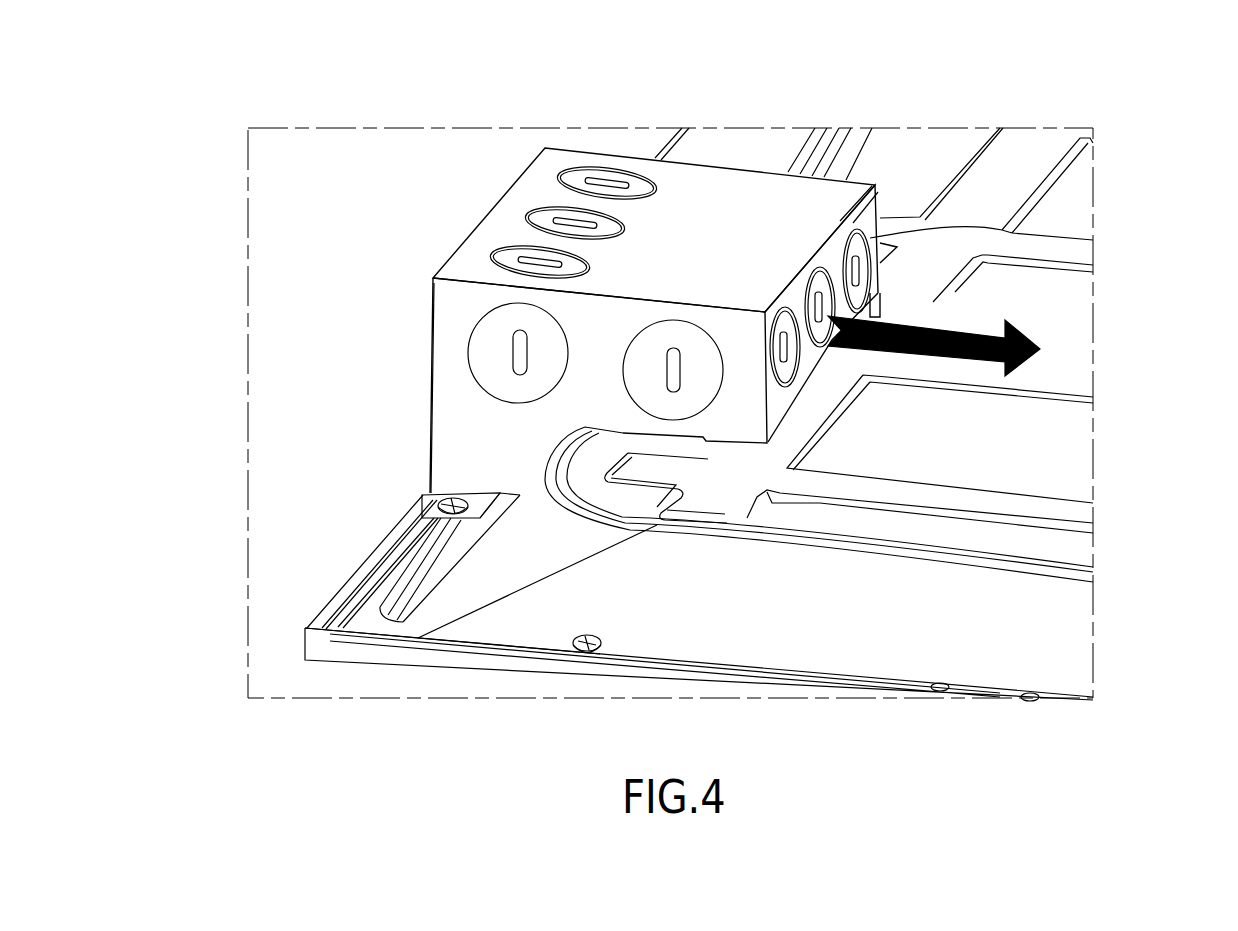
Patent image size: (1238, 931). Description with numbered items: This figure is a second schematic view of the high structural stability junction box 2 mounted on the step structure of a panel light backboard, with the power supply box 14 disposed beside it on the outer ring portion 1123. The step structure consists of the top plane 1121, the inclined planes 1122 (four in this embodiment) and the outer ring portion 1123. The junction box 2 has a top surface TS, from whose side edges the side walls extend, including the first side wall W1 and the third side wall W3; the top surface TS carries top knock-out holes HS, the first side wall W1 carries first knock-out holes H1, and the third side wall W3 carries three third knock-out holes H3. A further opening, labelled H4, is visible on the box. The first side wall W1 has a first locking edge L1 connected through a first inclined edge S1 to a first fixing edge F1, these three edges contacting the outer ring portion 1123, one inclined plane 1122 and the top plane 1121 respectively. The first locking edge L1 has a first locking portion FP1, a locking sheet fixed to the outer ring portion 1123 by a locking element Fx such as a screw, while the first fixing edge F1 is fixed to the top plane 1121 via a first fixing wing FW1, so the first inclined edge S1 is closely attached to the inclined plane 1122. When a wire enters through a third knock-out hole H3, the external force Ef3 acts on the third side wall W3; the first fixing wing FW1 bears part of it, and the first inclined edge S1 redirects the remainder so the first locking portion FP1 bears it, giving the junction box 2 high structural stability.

The junction box 2 is at (448, 155).
The power supply box 14 is at (710, 148).
The top surface TS is at (753, 187).
The top knock-out holes HS is at (577, 180).
The first side wall W1 is at (735, 420).
The fourth hole H4 is at (432, 302).
The first knock-out holes H1 is at (652, 390).
The external force Ef3 is at (952, 346).
The third side wall W3 is at (883, 226).
The third knock-out holes H3 is at (850, 273).
The top plane 1121 is at (1027, 457).
The first fixing wing FW1 is at (683, 440).
The first inclined edge S1 is at (573, 510).
The first fixing edge F1 is at (712, 440).
The first locking portion FP1 is at (418, 503).
The locking element Fx is at (437, 503).
The first locking edge L1 is at (467, 498).
The outer ring portion 1123 is at (408, 560).
The inclined planes 1122 is at (428, 547).